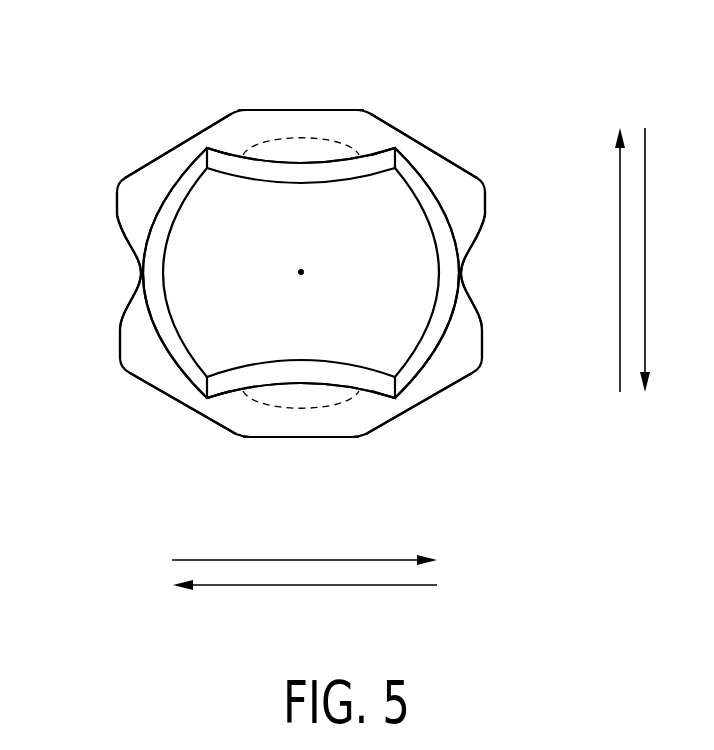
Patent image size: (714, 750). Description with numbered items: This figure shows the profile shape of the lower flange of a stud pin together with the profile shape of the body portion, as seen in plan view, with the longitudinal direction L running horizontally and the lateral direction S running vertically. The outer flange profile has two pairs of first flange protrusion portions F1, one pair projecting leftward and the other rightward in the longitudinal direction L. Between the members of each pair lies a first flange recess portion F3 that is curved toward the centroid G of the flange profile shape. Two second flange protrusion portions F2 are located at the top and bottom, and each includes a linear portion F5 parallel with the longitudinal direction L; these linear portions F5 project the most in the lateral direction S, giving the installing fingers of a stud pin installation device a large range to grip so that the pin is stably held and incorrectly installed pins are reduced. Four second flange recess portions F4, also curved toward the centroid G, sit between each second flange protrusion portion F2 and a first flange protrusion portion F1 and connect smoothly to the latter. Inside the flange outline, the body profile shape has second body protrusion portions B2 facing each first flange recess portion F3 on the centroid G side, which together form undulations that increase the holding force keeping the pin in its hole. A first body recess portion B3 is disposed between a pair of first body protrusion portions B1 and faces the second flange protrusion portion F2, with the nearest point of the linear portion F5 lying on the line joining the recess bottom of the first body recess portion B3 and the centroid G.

The first flange protrusion portion F1 is at (117, 190).
The second flange protrusion portion F2 is at (243, 110).
The first flange recess portion F3 is at (140, 293).
The second flange recess portion F4 is at (170, 147).
The linear portion F5 is at (283, 110).
The first body protrusion portion B1 is at (207, 145).
The second body protrusion portion B2 is at (140, 265).
The first body recess portion B3 is at (327, 160).
The centroid G is at (317, 274).
The lateral direction S is at (640, 260).
The longitudinal direction L is at (304, 588).